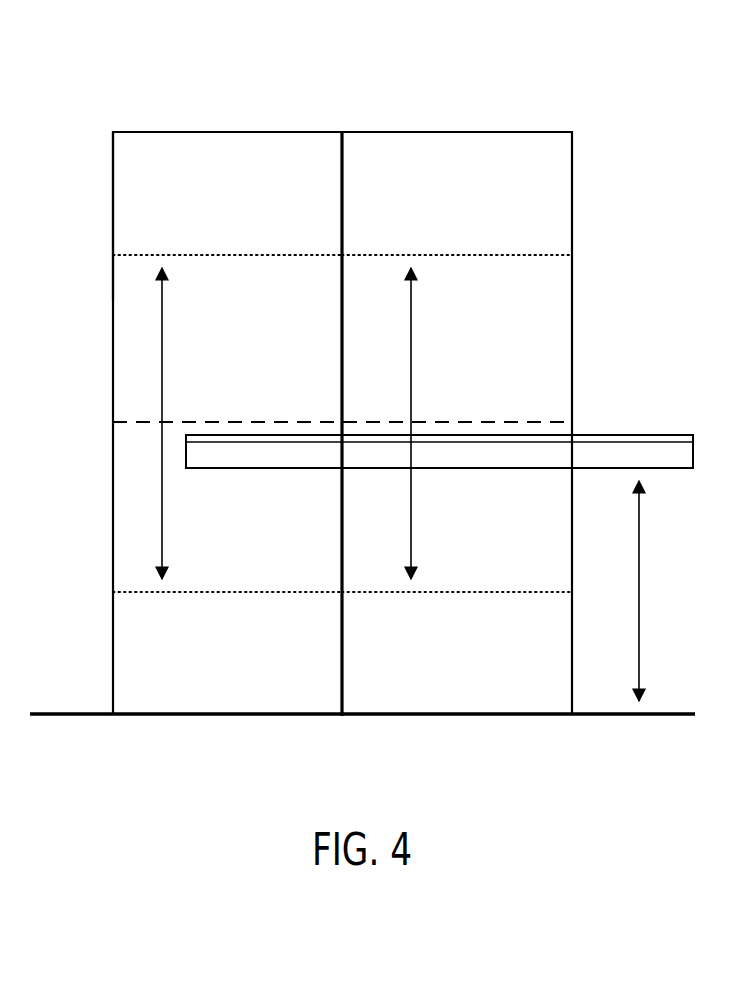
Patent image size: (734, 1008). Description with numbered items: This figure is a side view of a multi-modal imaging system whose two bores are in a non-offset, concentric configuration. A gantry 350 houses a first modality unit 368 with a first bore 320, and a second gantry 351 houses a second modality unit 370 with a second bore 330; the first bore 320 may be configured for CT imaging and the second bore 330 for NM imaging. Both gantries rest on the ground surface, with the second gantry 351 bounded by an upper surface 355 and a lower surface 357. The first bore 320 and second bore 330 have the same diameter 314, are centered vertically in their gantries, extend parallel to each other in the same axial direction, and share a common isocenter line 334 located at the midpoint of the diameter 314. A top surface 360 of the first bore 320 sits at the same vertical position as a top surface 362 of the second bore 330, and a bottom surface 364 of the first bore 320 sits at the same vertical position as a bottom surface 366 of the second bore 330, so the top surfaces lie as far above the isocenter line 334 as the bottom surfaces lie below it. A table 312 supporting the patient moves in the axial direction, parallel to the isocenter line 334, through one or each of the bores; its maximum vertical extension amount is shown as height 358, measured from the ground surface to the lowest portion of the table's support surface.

The table 312 is at (617, 435).
The diameter 314 is at (163, 363).
The first bore 320 is at (505, 592).
The second bore 330 is at (280, 592).
The isocenter line 334 is at (488, 422).
The gantry 350 is at (373, 132).
The second gantry 351 is at (177, 132).
The upper surface 355 is at (135, 130).
The lower surface 357 is at (227, 718).
The height 358 is at (660, 651).
The top surface 360 is at (447, 255).
The top surface 362 is at (178, 255).
The bottom surface 364 is at (430, 592).
The bottom surface 366 is at (170, 592).
The first modality unit 368 is at (483, 132).
The second modality unit 370 is at (247, 132).